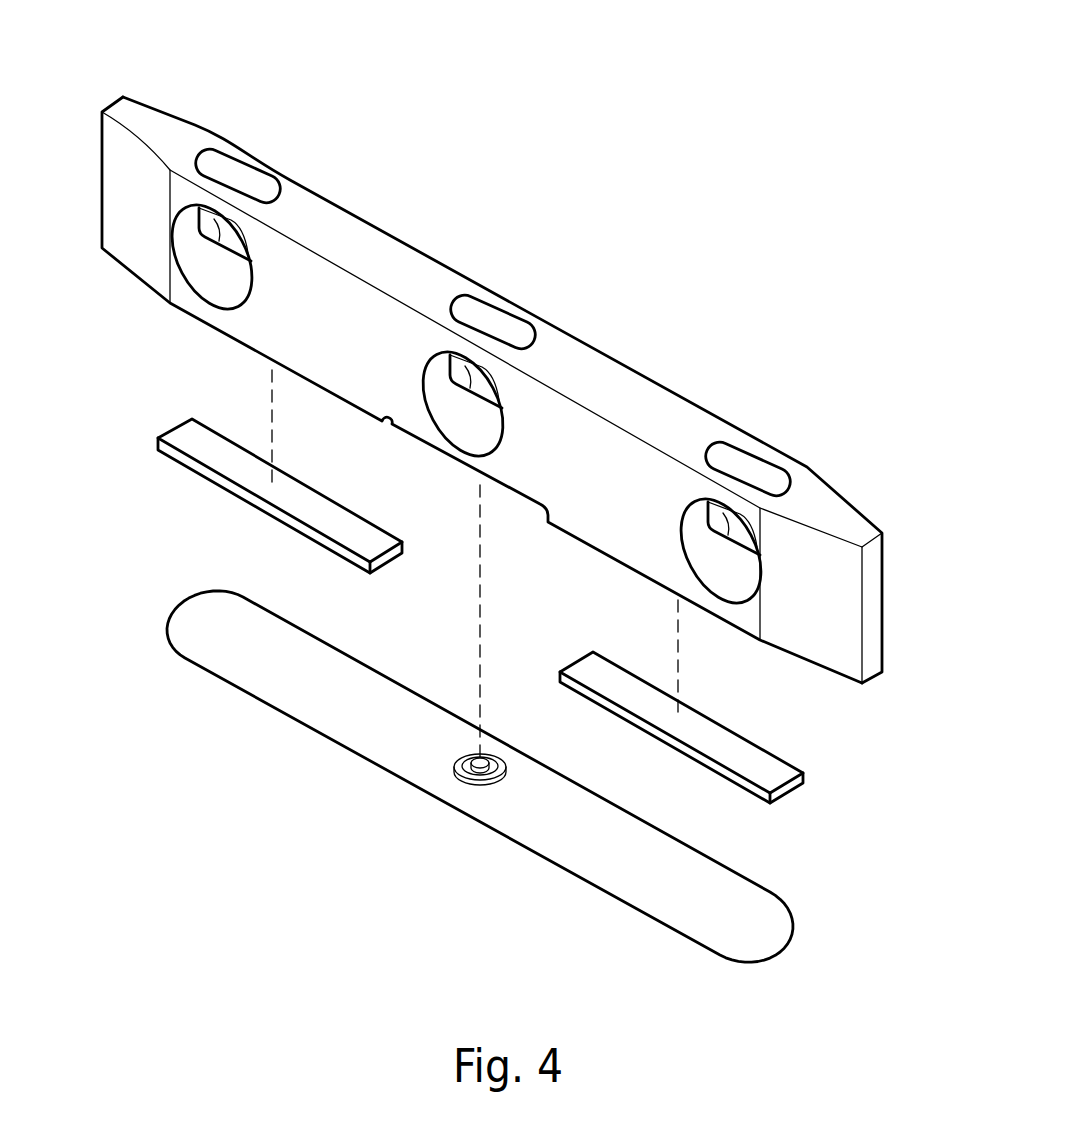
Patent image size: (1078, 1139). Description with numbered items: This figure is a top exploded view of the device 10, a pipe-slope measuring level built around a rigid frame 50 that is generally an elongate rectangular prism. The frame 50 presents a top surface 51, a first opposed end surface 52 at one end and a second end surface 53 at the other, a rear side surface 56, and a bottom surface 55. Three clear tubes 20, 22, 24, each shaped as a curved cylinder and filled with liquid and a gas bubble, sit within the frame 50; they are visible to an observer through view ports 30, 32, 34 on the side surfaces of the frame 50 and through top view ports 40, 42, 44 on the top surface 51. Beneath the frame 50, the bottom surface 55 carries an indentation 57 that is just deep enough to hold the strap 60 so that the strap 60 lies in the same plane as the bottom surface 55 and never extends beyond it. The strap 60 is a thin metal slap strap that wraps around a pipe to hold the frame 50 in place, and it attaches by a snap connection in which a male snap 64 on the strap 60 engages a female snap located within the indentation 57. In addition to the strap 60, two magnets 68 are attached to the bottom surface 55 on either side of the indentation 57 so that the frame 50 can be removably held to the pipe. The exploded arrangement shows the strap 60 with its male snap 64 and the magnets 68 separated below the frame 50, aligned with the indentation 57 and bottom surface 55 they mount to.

The device 10 is at (305, 88).
The tube 20 is at (207, 230).
The tube 22 is at (458, 373).
The tube 24 is at (717, 520).
The view port 30 is at (213, 272).
The view port 32 is at (492, 423).
The view port 34 is at (740, 568).
The top view port 40 is at (230, 170).
The top view port 42 is at (503, 327).
The top view port 44 is at (728, 455).
The frame 50 is at (685, 386).
The top surface 51 is at (327, 218).
The first opposed end surface 52 is at (98, 175).
The second end surface 53 is at (870, 603).
The bottom surface 55 is at (208, 327).
The rear side surface 56 is at (728, 422).
The indentation 57 is at (395, 426).
The strap 60 is at (755, 935).
The male snap 64 is at (430, 797).
The magnets 68 is at (200, 438).